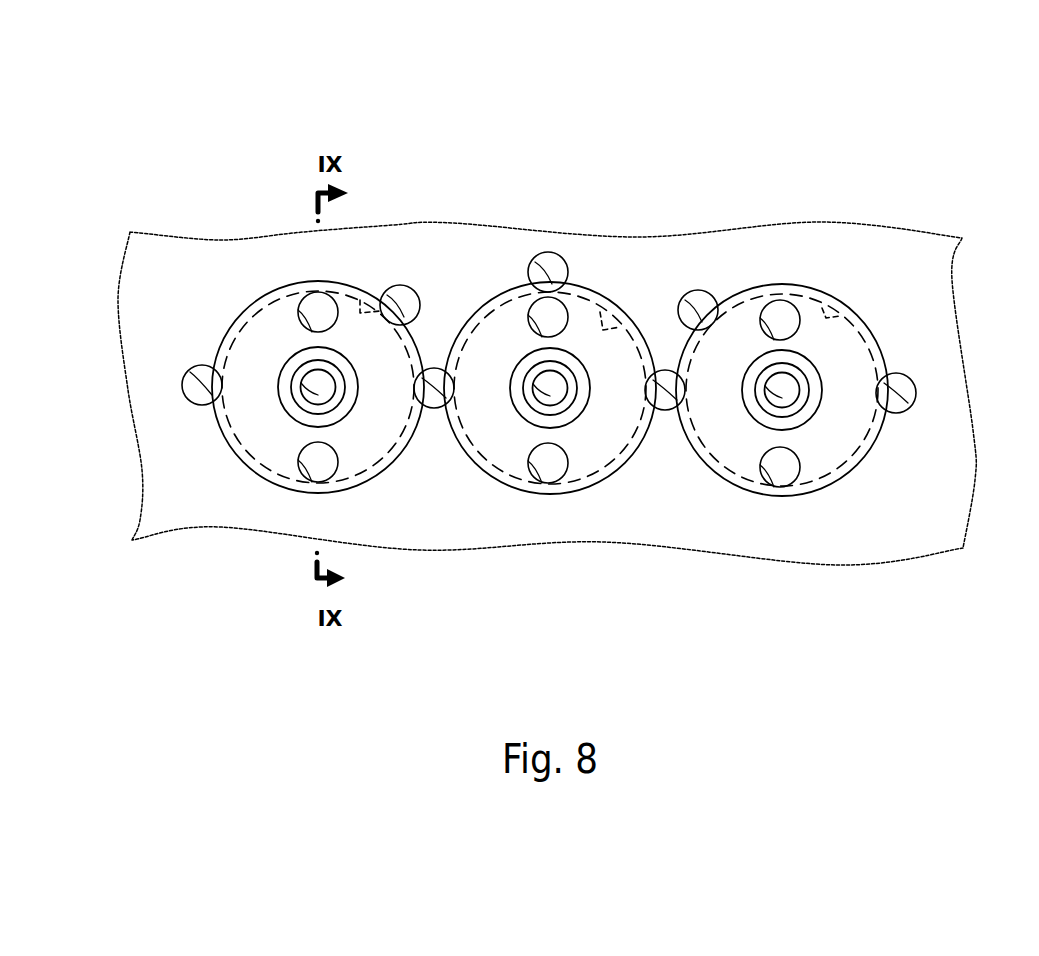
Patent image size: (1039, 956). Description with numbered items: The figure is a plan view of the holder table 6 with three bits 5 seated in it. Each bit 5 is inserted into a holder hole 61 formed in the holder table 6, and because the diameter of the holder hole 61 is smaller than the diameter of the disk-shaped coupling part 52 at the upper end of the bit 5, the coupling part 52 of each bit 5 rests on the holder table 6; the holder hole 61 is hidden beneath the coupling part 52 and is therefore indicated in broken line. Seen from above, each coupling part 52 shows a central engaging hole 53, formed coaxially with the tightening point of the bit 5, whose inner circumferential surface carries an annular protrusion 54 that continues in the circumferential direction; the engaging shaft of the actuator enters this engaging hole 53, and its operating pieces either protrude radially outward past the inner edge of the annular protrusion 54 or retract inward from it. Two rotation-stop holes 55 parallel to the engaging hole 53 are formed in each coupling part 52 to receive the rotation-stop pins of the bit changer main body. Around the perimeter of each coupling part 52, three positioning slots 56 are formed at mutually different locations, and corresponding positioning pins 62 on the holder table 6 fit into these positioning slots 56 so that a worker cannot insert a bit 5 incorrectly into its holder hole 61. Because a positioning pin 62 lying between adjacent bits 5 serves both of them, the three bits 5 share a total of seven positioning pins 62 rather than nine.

The bit 5 is at (367, 490).
The holder table 6 is at (895, 281).
The coupling part 52 is at (217, 420).
The engaging hole 53 is at (310, 397).
The annular protrusion 54 is at (352, 413).
The rotation-stop hole 55 is at (300, 310).
The positioning slot 56 is at (202, 385).
The holder hole 61 is at (360, 313).
The positioning pin 62 is at (202, 385).